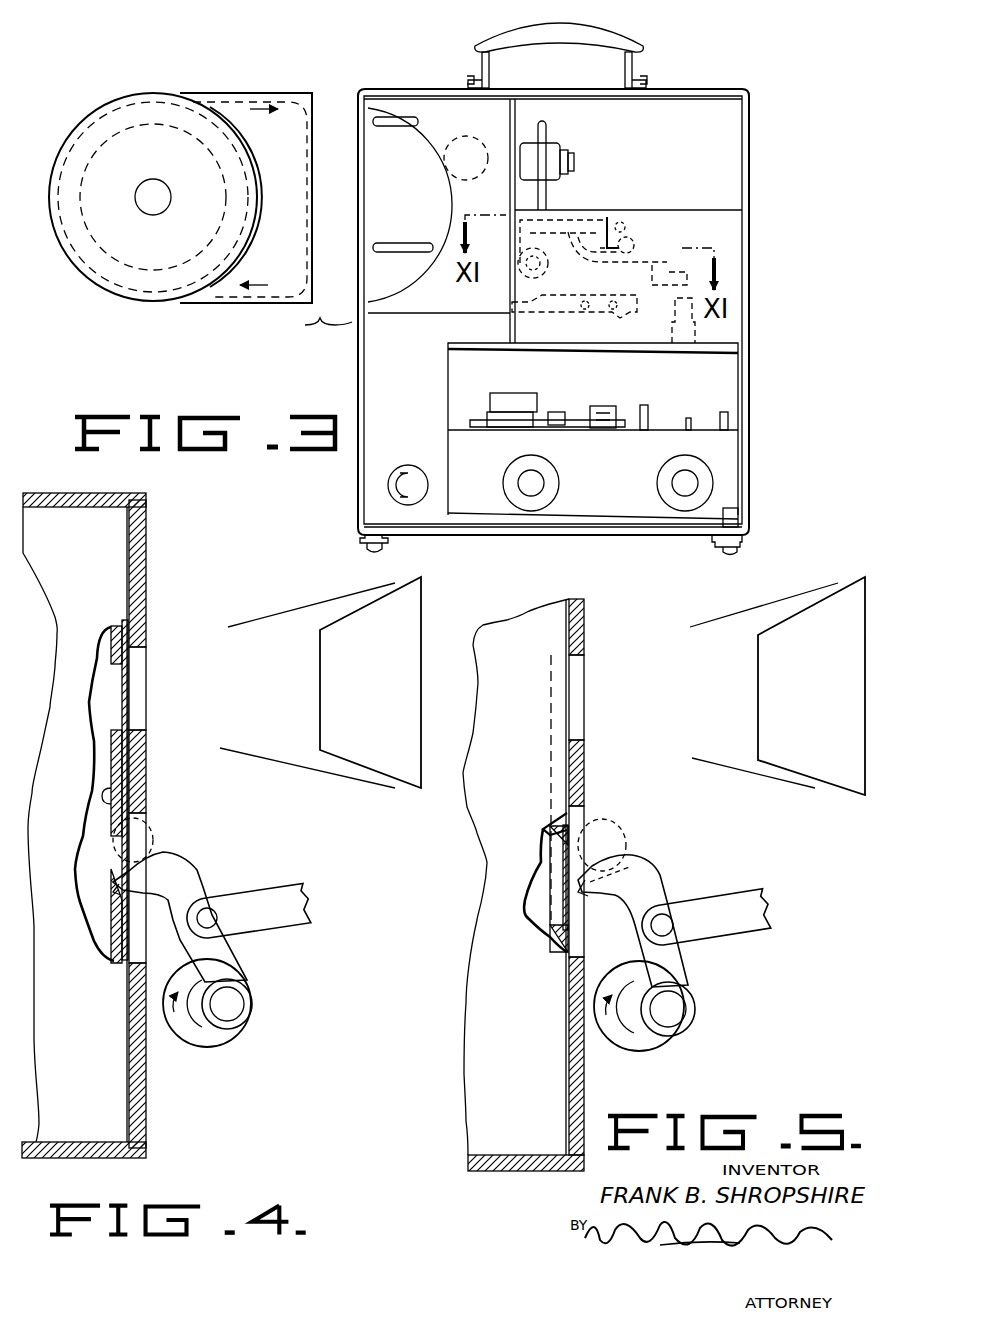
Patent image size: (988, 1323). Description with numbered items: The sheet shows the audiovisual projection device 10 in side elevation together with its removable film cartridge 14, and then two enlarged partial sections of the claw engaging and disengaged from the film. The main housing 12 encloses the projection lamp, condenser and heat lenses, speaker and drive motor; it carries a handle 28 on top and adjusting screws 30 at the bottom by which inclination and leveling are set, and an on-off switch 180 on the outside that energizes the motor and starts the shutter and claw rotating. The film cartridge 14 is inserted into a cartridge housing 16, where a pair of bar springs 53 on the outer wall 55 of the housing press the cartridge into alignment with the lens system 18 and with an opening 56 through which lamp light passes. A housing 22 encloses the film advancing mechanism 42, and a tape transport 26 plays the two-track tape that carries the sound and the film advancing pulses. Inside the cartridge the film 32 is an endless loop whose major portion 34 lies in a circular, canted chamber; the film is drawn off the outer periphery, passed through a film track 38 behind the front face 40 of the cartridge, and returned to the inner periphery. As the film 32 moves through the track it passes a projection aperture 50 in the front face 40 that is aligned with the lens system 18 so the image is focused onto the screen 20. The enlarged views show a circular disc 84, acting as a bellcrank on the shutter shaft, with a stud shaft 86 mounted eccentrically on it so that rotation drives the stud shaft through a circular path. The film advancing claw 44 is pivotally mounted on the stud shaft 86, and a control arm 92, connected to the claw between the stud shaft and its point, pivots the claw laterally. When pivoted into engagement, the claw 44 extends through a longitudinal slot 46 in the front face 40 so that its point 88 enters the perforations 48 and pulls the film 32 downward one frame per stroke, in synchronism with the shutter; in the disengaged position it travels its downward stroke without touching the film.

In FIG. 3, the audiovisual projection device 10 is at (754, 95).
In FIG. 3, the main housing 12 is at (688, 90).
In FIG. 3, the film cartridge 14 is at (218, 306).
In FIG. 4, the film cartridge 14 is at (68, 512).
In FIG. 5, the film cartridge 14 is at (464, 1022).
In FIG. 3, the cartridge housing 16 is at (440, 304).
In FIG. 3, the lens system 18 is at (560, 146).
In FIG. 4, the screen 20 is at (384, 662).
In FIG. 5, the screen 20 is at (828, 673).
In FIG. 3, the housing for the film advancing mechanism 22 is at (735, 250).
In FIG. 3, the tape transport 26 is at (730, 462).
In FIG. 3, the handle 28 is at (630, 38).
In FIG. 3, the adjusting screws 30 is at (360, 546).
In FIG. 3, the film 32 is at (232, 102).
In FIG. 4, the film 32 is at (126, 756).
In FIG. 5, the film 32 is at (548, 830).
In FIG. 3, the major portion of the film loop 34 is at (96, 262).
In FIG. 4, the film track 38 is at (120, 790).
In FIG. 4, the front face of the cartridge 40 is at (130, 628).
In FIG. 3, the film advancing mechanism 42 is at (578, 215).
In FIG. 4, the film advancing claw 44 is at (188, 878).
In FIG. 5, the film advancing claw 44 is at (640, 874).
In FIG. 4, the longitudinal slot 46 is at (139, 820).
In FIG. 5, the longitudinal slot 46 is at (585, 815).
In FIG. 4, the perforations 48 is at (122, 660).
In FIG. 5, the perforations 48 is at (567, 848).
In FIG. 4, the projection aperture 50 is at (137, 670).
In FIG. 5, the projection aperture 50 is at (585, 662).
In FIG. 3, the bar springs 53 is at (405, 128).
In FIG. 3, the outer wall of the housing 55 is at (432, 218).
In FIG. 3, the opening 56 is at (470, 142).
In FIG. 4, the circular disc 84 is at (206, 1042).
In FIG. 5, the circular disc 84 is at (645, 1048).
In FIG. 4, the stud shaft 86 is at (240, 1000).
In FIG. 5, the stud shaft 86 is at (682, 1012).
In FIG. 4, the point of the claw 88 is at (100, 905).
In FIG. 5, the point of the claw 88 is at (588, 893).
In FIG. 4, the control arm 92 is at (258, 900).
In FIG. 5, the control arm 92 is at (730, 898).
In FIG. 3, the on-off switch 180 is at (412, 480).